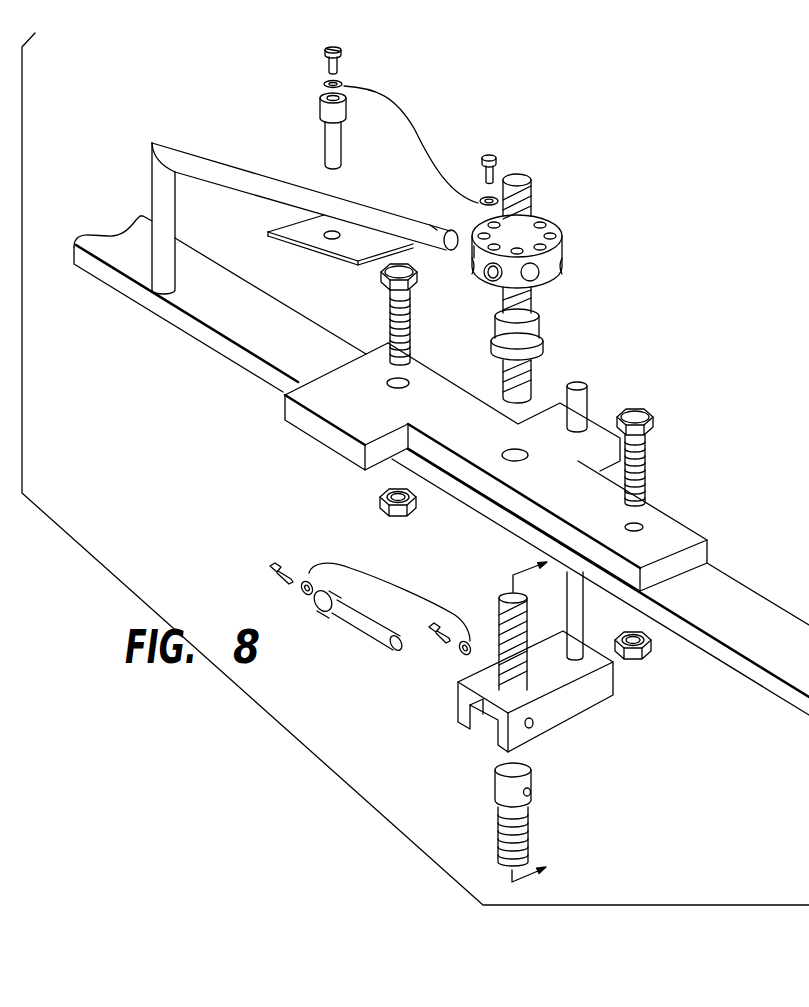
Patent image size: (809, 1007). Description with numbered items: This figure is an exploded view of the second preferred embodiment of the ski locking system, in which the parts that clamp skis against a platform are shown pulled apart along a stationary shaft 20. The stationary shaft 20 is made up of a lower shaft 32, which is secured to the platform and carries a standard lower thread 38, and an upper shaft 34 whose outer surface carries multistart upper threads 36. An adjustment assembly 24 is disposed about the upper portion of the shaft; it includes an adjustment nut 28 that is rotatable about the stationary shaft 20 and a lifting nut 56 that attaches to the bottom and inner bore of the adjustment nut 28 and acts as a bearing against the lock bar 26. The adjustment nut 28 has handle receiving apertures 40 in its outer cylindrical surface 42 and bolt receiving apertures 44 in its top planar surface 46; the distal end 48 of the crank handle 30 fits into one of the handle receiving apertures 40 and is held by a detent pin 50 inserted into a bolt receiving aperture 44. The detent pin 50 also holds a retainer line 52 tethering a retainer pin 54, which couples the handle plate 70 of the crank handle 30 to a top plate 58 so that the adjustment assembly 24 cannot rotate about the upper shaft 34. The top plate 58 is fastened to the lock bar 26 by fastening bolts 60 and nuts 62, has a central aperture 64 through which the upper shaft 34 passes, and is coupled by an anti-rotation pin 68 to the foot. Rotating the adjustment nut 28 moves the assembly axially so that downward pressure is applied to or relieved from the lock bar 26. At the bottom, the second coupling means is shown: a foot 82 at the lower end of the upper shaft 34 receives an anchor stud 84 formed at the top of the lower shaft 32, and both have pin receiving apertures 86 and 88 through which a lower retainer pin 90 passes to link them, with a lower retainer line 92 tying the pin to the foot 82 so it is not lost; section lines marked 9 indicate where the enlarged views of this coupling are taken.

The section line 9- 9 is at (536, 722).
The stationary shaft 20 is at (514, 177).
The adjustment assembly 24 is at (611, 262).
The lock bar 26 is at (226, 325).
The adjustment nut 28 is at (553, 261).
The crank handle 30 is at (305, 196).
The lower shaft 32 is at (528, 807).
The upper shaft 34 is at (553, 274).
The upper threads 36 is at (527, 206).
The lower thread 38 is at (520, 834).
The handle receiving apertures 40 is at (493, 272).
The outer cylindrical surface 42 is at (548, 273).
The bolt receiving apertures 44 is at (488, 225).
The top planar surface 46 is at (475, 250).
The distal end 48 is at (422, 240).
The detent pin 50 is at (490, 155).
The retainer line 52 is at (375, 87).
The retainer pin 54 is at (313, 121).
The lifting nut 56 is at (552, 319).
The top plate 58 is at (527, 467).
The fastening bolts 60 is at (388, 317).
The nuts 62 is at (380, 505).
The central aperture 64 is at (512, 452).
The anti-rotation pin 68 is at (578, 383).
The handle plate 70 is at (292, 226).
The foot 82 is at (580, 693).
The anchor stud 84 is at (503, 777).
The pin receiving aperture 86 is at (533, 725).
The pin receiving aperture 88 is at (531, 795).
The lower retainer pin 90 is at (362, 633).
The lower retainer line 92 is at (350, 566).